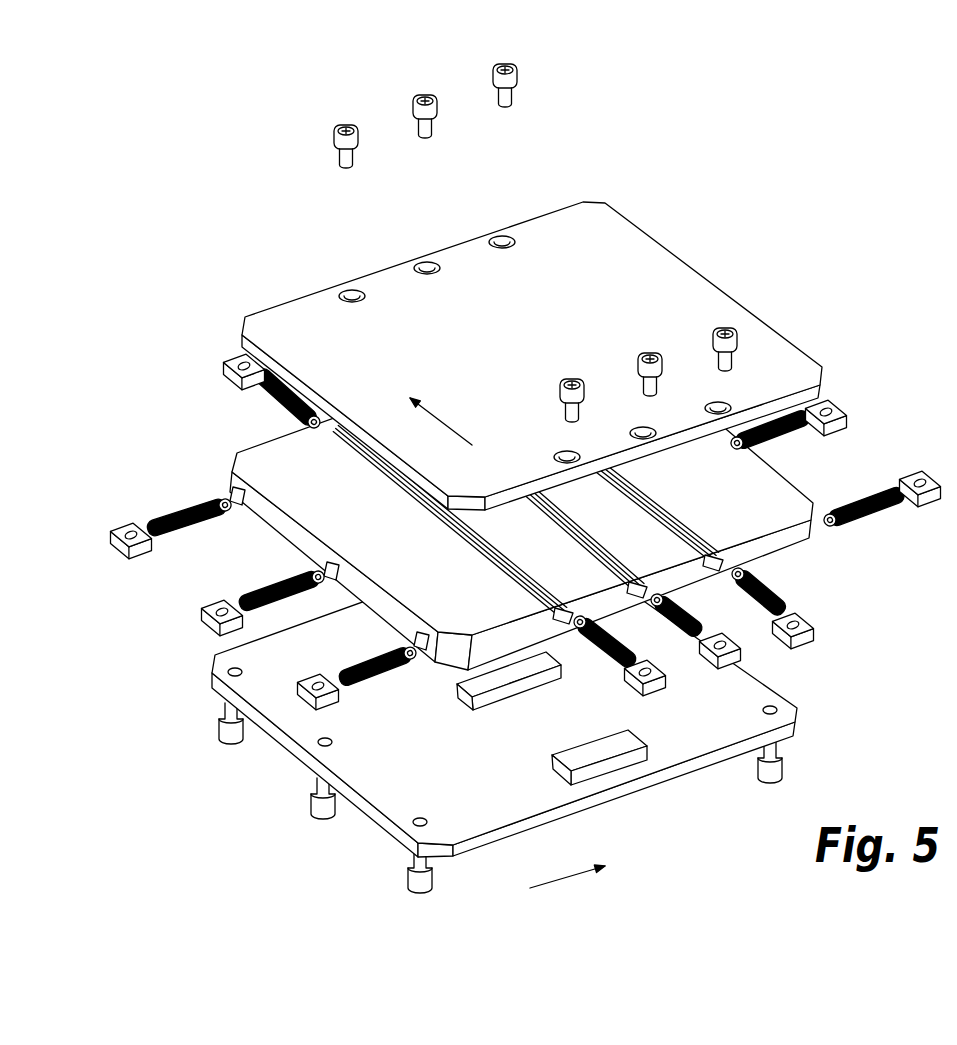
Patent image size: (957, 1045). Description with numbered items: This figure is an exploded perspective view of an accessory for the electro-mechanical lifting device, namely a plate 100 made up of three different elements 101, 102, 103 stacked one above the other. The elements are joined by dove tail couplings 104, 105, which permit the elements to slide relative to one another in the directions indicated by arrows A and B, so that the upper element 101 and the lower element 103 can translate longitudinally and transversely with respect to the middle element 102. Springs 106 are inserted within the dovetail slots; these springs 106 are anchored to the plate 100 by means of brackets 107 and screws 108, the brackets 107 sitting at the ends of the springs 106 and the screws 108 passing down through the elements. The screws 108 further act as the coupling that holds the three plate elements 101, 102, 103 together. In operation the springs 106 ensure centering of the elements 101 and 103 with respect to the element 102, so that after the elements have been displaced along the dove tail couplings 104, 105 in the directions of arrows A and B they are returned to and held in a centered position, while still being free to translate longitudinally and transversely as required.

The plate 100 is at (780, 195).
The plate element 101 is at (643, 250).
The plate element 102 is at (798, 545).
The plate element 103 is at (755, 683).
The dove tail coupling 104 is at (628, 588).
The dove tail coupling 105 is at (607, 748).
The spring 106 is at (867, 396).
The bracket 107 is at (197, 513).
The screw 108 is at (504, 80).